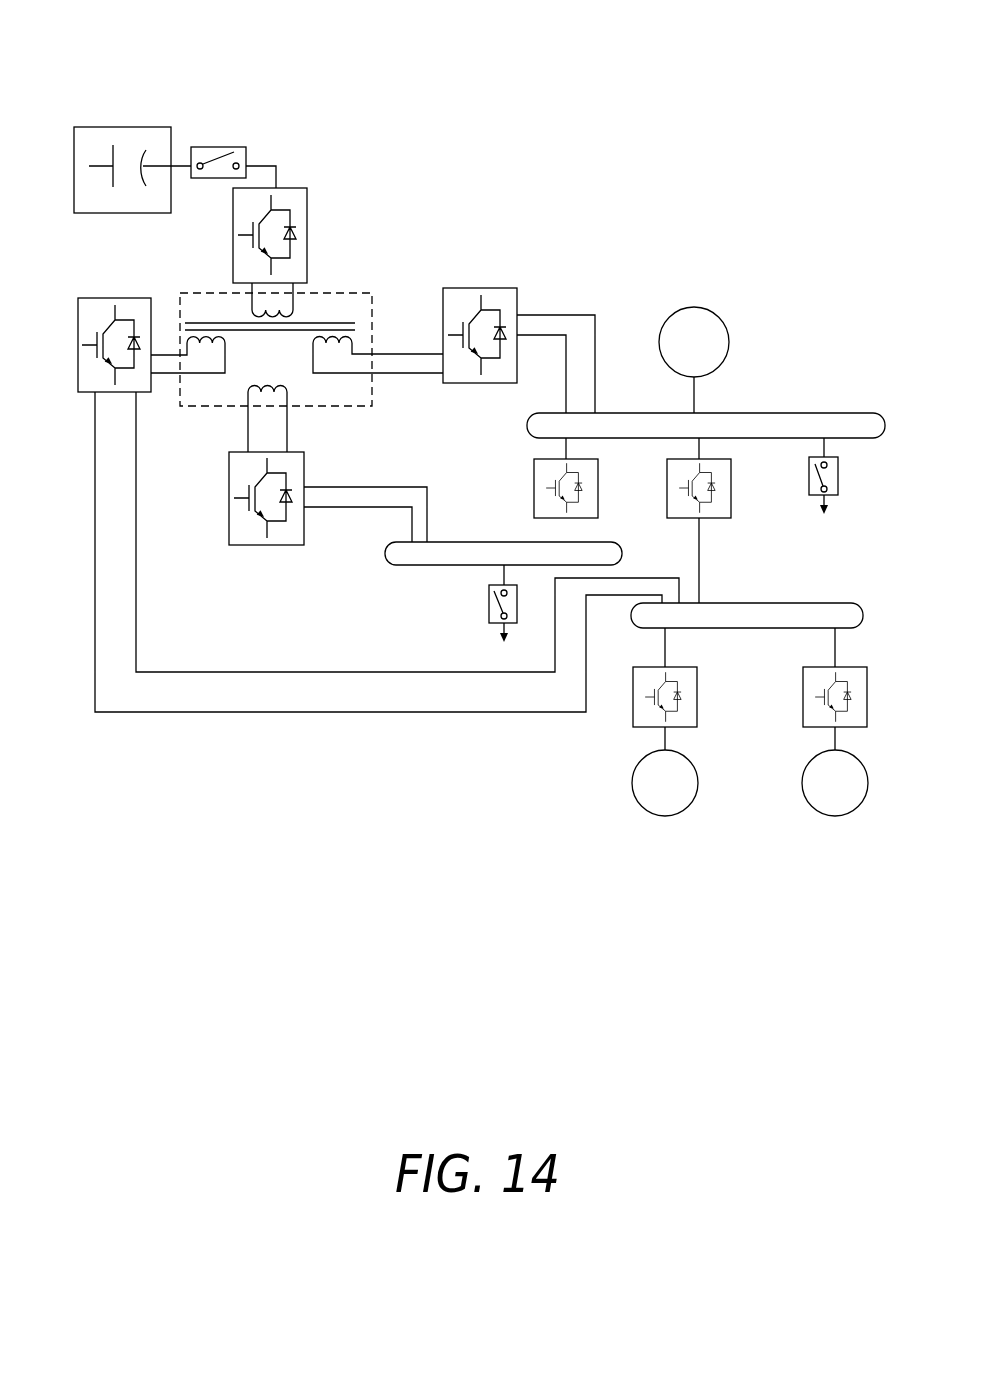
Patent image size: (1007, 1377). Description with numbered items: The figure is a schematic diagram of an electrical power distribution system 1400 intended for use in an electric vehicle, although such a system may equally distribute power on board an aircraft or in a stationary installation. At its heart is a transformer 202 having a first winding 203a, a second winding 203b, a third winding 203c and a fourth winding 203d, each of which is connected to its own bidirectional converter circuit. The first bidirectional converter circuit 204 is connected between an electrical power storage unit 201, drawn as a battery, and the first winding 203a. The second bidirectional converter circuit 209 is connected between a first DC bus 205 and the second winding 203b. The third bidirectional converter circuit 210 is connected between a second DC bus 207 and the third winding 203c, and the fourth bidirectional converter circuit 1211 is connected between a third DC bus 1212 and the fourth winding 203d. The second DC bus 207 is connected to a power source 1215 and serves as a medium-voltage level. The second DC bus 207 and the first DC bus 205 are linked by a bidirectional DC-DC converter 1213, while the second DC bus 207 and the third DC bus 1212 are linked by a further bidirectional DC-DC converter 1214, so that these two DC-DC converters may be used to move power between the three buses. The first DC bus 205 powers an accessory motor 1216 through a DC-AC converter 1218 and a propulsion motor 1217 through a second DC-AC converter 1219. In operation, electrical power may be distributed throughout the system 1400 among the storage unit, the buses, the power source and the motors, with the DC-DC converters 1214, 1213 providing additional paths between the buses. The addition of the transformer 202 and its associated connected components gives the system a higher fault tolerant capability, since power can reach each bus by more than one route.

The electrical power distribution system 1400 is at (742, 171).
The electrical power storage unit 201 is at (160, 127).
The first bidirectional converter circuit 204 is at (292, 187).
The transformer 202 is at (193, 293).
The first winding 203a is at (250, 312).
The second winding 203b is at (193, 340).
The third winding 203c is at (347, 333).
The fourth winding 203d is at (290, 376).
The second bidirectional converter circuit 209 is at (90, 297).
The third bidirectional converter circuit 210 is at (505, 288).
The fourth bidirectional converter circuit 1211 is at (229, 508).
The power source 1215 is at (702, 308).
The second DC bus 207 is at (787, 413).
The further bidirectional DC-DC converter 1214 is at (534, 465).
The bidirectional DC-DC converter 1213 is at (720, 518).
The third DC bus 1212 is at (413, 565).
The first DC bus 205 is at (833, 603).
The DC-AC converter 1218 is at (633, 722).
The motor 1216 is at (632, 790).
The DC-AC converter 1219 is at (803, 718).
The motor 1217 is at (836, 816).